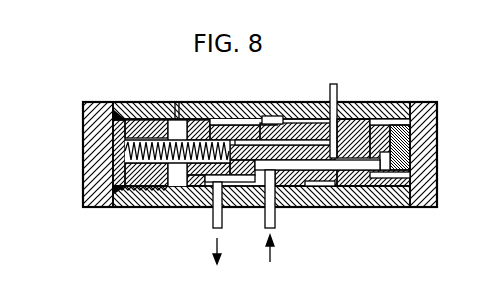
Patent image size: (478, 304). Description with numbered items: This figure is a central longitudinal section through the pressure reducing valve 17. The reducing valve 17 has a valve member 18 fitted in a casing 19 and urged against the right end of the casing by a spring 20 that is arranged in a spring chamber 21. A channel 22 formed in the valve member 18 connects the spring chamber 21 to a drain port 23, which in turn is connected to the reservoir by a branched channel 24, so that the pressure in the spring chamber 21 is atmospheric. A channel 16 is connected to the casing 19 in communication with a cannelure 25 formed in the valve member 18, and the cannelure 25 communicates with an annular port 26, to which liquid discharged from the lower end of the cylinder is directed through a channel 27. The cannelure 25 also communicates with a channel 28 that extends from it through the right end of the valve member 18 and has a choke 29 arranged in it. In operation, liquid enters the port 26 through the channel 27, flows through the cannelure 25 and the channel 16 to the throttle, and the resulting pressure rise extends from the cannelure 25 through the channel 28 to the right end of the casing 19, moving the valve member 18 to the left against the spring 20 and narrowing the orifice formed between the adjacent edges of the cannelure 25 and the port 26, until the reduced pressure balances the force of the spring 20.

The channel 16 is at (215, 224).
The reducing valve 17 is at (55, 123).
The valve member 18 is at (428, 142).
The casing 19 is at (437, 112).
The spring 20 is at (181, 156).
The spring chamber 21 is at (177, 122).
The channel 22 is at (372, 112).
The drain port 23 is at (320, 190).
The branched channel 24 is at (338, 88).
The cannelure 25 is at (243, 120).
The annular port 26 is at (272, 118).
The channel 27 is at (275, 224).
The channel 28 is at (362, 166).
The choke 29 is at (405, 166).